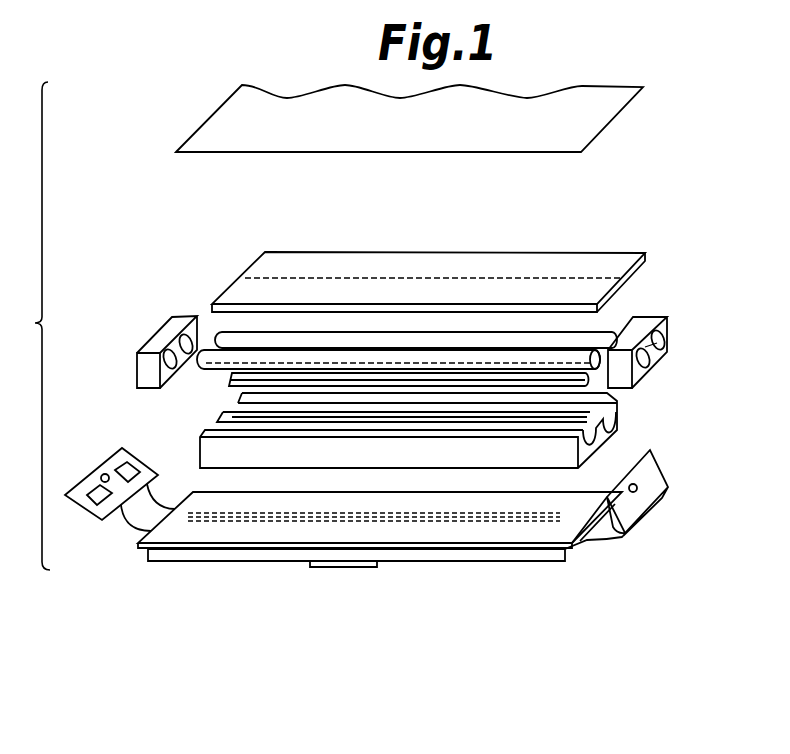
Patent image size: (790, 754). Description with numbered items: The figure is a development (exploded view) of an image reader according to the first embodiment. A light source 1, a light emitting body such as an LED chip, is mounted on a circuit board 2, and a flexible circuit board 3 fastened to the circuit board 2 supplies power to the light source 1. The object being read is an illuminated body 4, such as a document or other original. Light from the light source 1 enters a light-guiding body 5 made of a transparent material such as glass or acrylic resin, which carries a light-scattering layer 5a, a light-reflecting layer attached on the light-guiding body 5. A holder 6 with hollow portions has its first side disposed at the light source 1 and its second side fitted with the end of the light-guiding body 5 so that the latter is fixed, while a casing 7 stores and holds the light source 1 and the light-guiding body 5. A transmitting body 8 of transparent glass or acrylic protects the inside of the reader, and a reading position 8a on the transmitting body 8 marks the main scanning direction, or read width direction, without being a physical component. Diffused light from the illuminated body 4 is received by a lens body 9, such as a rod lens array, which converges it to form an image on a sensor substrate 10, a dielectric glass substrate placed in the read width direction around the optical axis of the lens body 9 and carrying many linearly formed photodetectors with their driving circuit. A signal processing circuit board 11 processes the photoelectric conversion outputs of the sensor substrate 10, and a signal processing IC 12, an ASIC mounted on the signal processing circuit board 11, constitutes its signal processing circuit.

The light source 1 is at (93, 488).
The circuit board 2 is at (88, 507).
The flexible circuit board 3 is at (130, 522).
The illuminated body 4 is at (220, 153).
The light-guiding body 5 is at (217, 337).
The light-scattering layer 5a is at (577, 363).
The holder 6 is at (143, 370).
The casing 7 is at (200, 450).
The transmitting body 8 is at (432, 249).
The reading position 8a is at (499, 277).
The lens body 9 is at (588, 381).
The sensor substrate 10 is at (412, 530).
The signal processing circuit board 11 is at (505, 557).
The signal processing IC 12 is at (313, 567).